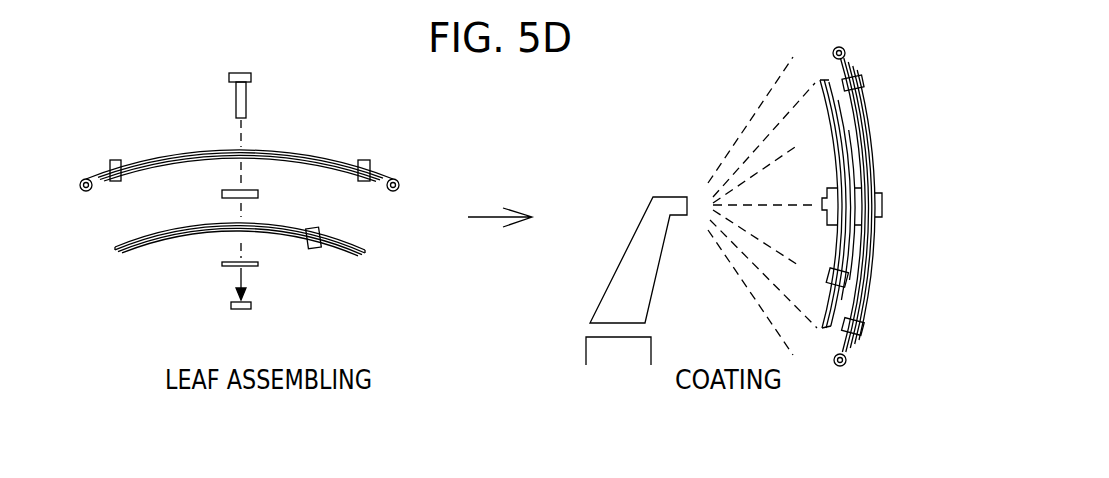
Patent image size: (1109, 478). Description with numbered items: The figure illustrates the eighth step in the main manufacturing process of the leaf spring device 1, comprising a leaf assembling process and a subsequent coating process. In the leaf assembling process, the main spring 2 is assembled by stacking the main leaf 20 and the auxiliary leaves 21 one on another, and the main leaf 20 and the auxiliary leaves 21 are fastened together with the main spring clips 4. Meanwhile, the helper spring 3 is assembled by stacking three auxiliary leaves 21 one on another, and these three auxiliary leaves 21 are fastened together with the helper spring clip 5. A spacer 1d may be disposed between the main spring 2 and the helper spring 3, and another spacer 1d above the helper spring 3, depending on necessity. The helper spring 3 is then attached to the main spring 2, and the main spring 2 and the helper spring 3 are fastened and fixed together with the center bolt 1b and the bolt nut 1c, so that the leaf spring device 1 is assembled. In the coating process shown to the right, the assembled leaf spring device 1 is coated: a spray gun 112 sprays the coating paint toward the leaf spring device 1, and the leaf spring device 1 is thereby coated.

The leaf spring device 1 is at (863, 70).
The center bolt 1b is at (251, 78).
The bolt nut 1c is at (251, 308).
The spacer 1d is at (258, 193).
The main spring 2 is at (473, 112).
The helper spring 3 is at (203, 308).
The main spring clip 4 is at (360, 160).
The helper spring clip 5 is at (309, 248).
The main leaf 20 is at (381, 180).
The auxiliary leaf 21 is at (377, 167).
The spray gun 112 is at (662, 197).